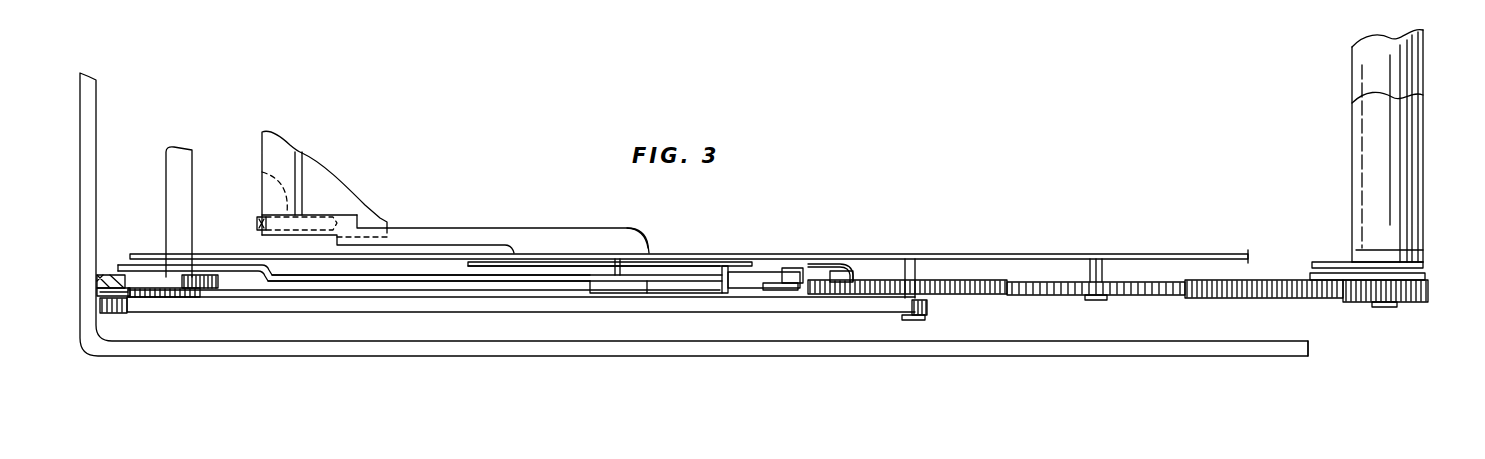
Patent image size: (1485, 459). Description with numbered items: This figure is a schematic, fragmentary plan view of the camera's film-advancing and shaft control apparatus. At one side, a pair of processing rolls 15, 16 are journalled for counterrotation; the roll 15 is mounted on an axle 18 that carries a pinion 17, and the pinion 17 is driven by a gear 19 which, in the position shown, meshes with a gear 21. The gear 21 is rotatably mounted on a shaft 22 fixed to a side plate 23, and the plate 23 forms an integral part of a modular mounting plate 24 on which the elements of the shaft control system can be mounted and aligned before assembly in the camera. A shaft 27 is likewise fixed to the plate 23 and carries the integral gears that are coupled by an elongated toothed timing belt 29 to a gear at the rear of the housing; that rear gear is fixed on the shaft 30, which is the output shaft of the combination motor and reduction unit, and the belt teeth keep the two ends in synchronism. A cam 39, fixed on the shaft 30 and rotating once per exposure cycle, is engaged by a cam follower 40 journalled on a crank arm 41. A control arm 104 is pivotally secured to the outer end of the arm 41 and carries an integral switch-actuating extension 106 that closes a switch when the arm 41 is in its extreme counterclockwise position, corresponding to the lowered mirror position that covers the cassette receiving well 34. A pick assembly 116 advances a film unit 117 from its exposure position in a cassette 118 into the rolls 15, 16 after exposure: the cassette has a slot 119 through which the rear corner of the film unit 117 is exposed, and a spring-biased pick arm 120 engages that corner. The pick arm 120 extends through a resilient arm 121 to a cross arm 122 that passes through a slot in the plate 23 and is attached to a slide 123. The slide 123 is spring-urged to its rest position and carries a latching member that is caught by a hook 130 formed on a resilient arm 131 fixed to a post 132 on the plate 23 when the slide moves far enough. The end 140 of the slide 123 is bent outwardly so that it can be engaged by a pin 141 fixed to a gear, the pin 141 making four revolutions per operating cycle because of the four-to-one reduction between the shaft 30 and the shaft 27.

The processing roll 15 is at (1420, 175).
The processing roll 16 is at (1420, 62).
The pinion 17 is at (1428, 292).
The axle 18 is at (1388, 307).
The gear 19 is at (1290, 298).
The gear 21 is at (1153, 297).
The shaft 22 is at (1102, 270).
The side plate 23 is at (985, 254).
The modular mounting plate 24 is at (853, 256).
The shaft 27 is at (915, 262).
The timing belt 29 is at (312, 312).
The shaft 30 is at (166, 186).
The cassette receiving well 34 is at (752, 190).
The cam 39 is at (170, 297).
The cam follower 40 is at (116, 275).
The crank arm 41 is at (198, 275).
The control arm 104 is at (381, 282).
The switch-actuating extension 106 is at (617, 285).
The pick assembly 116 is at (599, 222).
The film unit 117 is at (337, 188).
The cassette 118 is at (262, 140).
The slot 119 is at (262, 168).
The pick arm 120 is at (257, 222).
The resilient arm 121 is at (428, 228).
The cross arm 122 is at (643, 240).
The slide 123 is at (510, 266).
The hook 130 is at (735, 265).
The resilient arm 131 is at (752, 282).
The post 132 is at (792, 268).
The end of slide 140 is at (855, 274).
The pin 141 is at (832, 264).